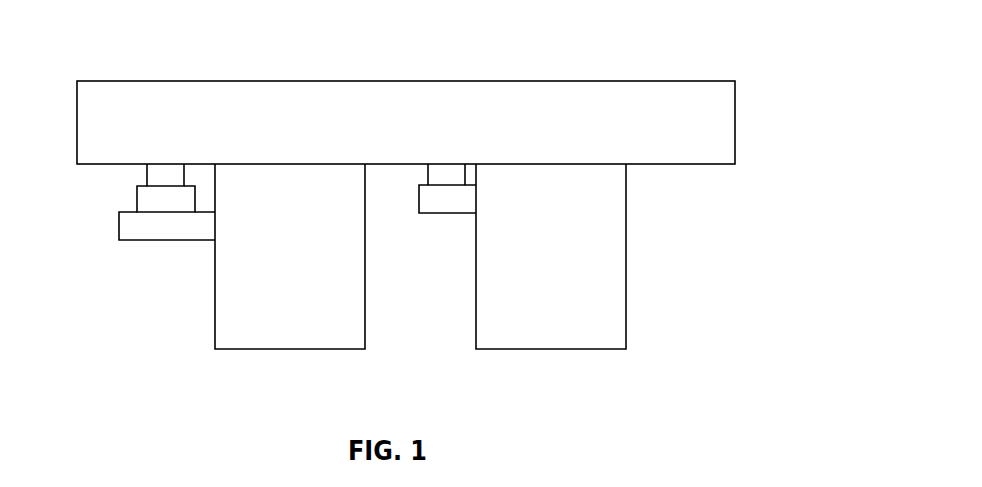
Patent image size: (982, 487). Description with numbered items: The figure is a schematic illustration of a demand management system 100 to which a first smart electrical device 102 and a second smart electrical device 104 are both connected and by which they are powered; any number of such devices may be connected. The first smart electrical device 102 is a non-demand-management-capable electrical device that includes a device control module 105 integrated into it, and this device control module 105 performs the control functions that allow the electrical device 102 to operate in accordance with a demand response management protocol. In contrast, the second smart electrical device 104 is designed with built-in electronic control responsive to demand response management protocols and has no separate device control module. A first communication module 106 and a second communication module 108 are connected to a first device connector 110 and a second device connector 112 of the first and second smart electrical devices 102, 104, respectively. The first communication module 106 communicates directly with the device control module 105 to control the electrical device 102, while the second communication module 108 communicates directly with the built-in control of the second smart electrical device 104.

The demand management system 100 is at (755, 61).
The first smart electrical device 102 is at (212, 353).
The second smart electrical device 104 is at (473, 353).
The device control module 105 is at (165, 240).
The first communication module 106 is at (147, 170).
The second communication module 108 is at (428, 173).
The first device connector 110 is at (137, 193).
The second device connector 112 is at (450, 213).